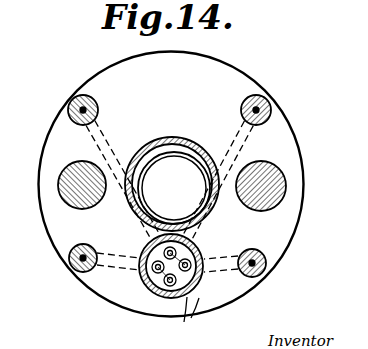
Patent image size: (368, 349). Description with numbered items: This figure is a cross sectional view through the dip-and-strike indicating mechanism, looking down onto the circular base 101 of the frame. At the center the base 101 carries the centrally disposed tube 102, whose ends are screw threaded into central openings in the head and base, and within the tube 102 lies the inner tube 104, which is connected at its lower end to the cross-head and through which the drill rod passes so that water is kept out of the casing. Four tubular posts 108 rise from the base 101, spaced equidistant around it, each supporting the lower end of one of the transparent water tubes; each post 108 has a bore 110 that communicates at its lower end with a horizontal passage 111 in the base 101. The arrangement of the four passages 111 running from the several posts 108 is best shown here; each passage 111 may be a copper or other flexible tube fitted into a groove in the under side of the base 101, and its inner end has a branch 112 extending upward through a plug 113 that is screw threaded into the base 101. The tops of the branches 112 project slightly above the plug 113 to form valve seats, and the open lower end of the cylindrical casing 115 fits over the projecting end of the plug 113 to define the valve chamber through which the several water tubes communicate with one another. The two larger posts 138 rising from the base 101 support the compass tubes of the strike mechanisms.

The base 101 is at (286, 153).
The centrally disposed tube 102 is at (167, 152).
The tube 104 is at (191, 142).
The post 108 is at (96, 104).
The bore 110 is at (83, 110).
The horizontal passage 111 is at (118, 211).
The branch 112 is at (193, 310).
The plug 113 is at (150, 283).
The cylindrical casing 115 is at (157, 298).
The post 138 is at (62, 166).